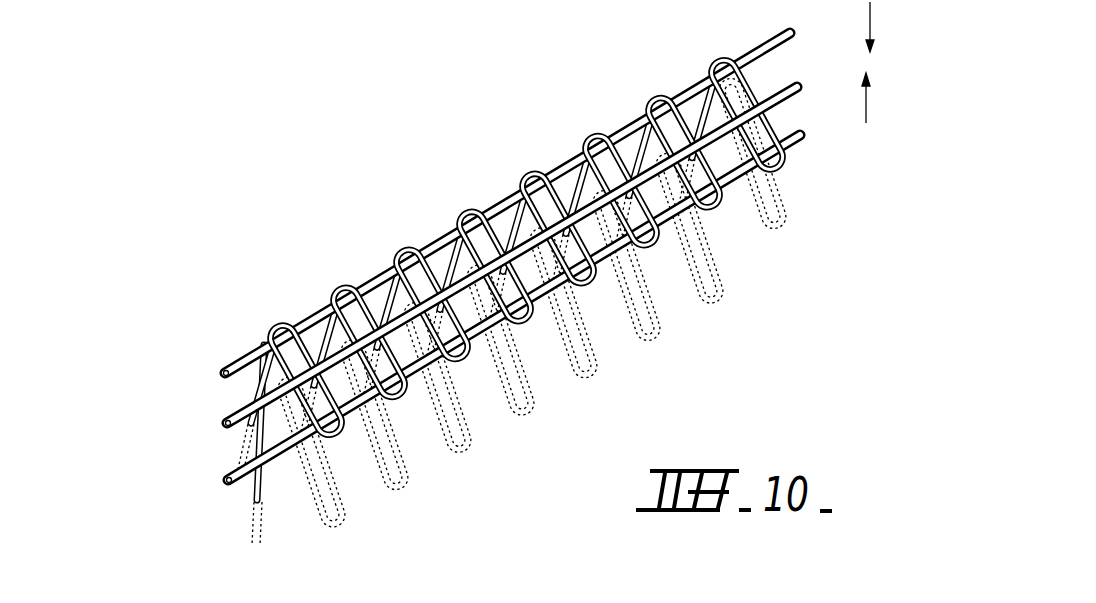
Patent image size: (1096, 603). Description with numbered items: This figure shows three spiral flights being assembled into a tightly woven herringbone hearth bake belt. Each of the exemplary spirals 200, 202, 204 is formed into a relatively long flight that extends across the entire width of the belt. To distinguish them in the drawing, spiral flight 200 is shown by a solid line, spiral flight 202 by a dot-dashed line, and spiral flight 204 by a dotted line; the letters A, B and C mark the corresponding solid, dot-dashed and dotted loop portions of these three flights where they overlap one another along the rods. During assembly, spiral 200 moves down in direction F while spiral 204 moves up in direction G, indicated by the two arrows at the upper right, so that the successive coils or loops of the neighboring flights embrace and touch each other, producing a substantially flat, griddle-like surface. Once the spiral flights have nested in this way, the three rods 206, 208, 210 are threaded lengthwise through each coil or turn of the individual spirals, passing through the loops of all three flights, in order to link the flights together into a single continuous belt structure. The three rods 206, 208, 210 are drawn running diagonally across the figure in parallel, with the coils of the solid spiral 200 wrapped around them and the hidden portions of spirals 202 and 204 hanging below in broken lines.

The spiral flight 200 is at (790, 163).
The spiral flight 202 is at (787, 215).
The spiral flight 204 is at (790, 268).
The rod 206 is at (220, 373).
The rod 208 is at (222, 425).
The rod 210 is at (222, 478).
The loop portion A is at (586, 234).
The wire portion B is at (569, 313).
The loop portion C is at (585, 302).
The direction F is at (881, 27).
The direction G is at (879, 98).